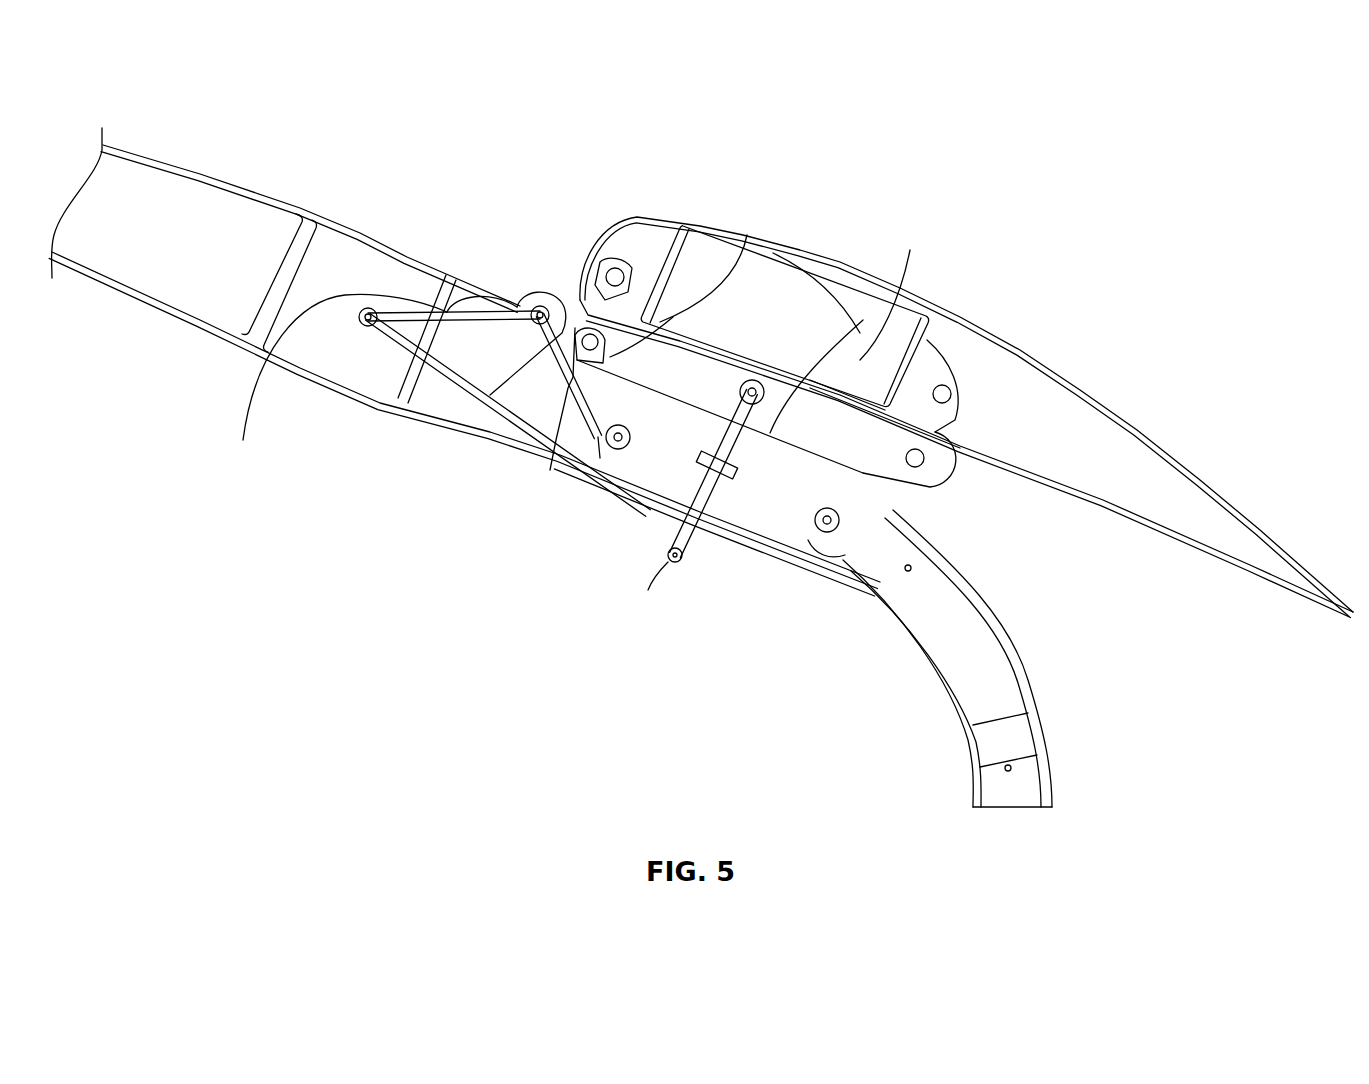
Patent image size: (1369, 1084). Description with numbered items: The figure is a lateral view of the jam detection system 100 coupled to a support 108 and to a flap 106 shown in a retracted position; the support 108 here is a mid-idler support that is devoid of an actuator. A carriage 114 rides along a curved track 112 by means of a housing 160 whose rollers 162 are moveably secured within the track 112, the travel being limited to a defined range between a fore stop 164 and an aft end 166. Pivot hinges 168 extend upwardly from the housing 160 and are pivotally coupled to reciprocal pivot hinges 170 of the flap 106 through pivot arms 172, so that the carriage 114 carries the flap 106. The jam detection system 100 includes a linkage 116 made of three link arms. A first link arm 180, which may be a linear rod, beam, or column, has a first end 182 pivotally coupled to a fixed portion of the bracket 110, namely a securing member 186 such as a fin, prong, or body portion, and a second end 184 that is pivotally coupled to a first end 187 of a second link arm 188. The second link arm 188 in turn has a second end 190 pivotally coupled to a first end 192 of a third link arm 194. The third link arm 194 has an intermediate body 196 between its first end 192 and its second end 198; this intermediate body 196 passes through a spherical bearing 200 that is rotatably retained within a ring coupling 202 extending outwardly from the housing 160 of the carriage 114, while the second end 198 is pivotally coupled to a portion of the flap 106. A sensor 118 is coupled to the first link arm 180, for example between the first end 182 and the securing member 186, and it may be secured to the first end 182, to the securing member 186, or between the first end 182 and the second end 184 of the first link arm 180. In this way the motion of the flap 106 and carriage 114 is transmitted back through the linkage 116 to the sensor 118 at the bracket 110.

The jam detection system 100 is at (462, 207).
The flap 106 is at (1080, 378).
The support 108 is at (376, 252).
The bracket 110 is at (990, 602).
The track 112 is at (1000, 683).
The carriage 114 is at (900, 505).
The linkage 116 is at (384, 358).
The sensor 118 is at (540, 306).
The housing 160 is at (782, 540).
The rollers 162 is at (581, 480).
The fore stop 164 is at (532, 466).
The aft end 166 is at (1010, 800).
The pivot hinges 168 is at (630, 272).
The reciprocal pivot hinges 170 is at (650, 250).
The pivot arms 172 is at (578, 300).
The first link arm 180 is at (443, 312).
The first end 182 is at (434, 423).
The second end 184 is at (262, 385).
The securing member 186 is at (505, 300).
The first end 187 is at (308, 370).
The second link arm 188 is at (490, 423).
The second end 190 is at (672, 562).
The first end 192 is at (682, 560).
The third link arm 194 is at (727, 498).
The intermediate body 196 is at (910, 332).
The second end 198 is at (866, 302).
The spherical bearing 200 is at (696, 470).
The ring coupling 202 is at (806, 560).